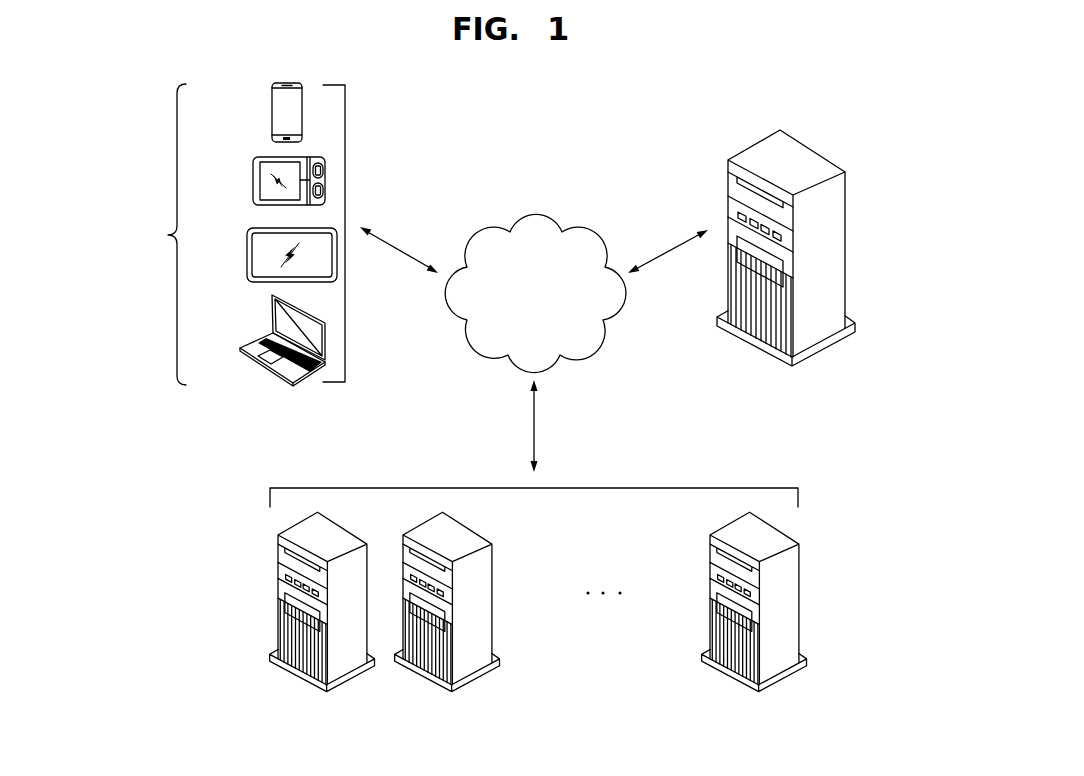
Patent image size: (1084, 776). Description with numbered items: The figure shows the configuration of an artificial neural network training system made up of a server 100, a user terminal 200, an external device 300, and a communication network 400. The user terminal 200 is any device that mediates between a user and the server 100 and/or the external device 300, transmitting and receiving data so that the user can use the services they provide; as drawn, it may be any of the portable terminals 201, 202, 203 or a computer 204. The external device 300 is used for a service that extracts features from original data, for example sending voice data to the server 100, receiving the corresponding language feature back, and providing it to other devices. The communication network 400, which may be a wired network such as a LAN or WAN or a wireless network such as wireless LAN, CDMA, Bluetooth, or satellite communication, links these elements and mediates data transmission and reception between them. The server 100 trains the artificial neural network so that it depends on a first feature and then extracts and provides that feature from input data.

The server 100 is at (812, 147).
The user terminal 200 is at (236, 234).
The portable terminal 201 is at (271, 112).
The portable terminal 202 is at (253, 181).
The portable terminal 203 is at (247, 254).
The computer 204 is at (272, 312).
The external device 300 is at (270, 697).
The communication network 400 is at (534, 213).